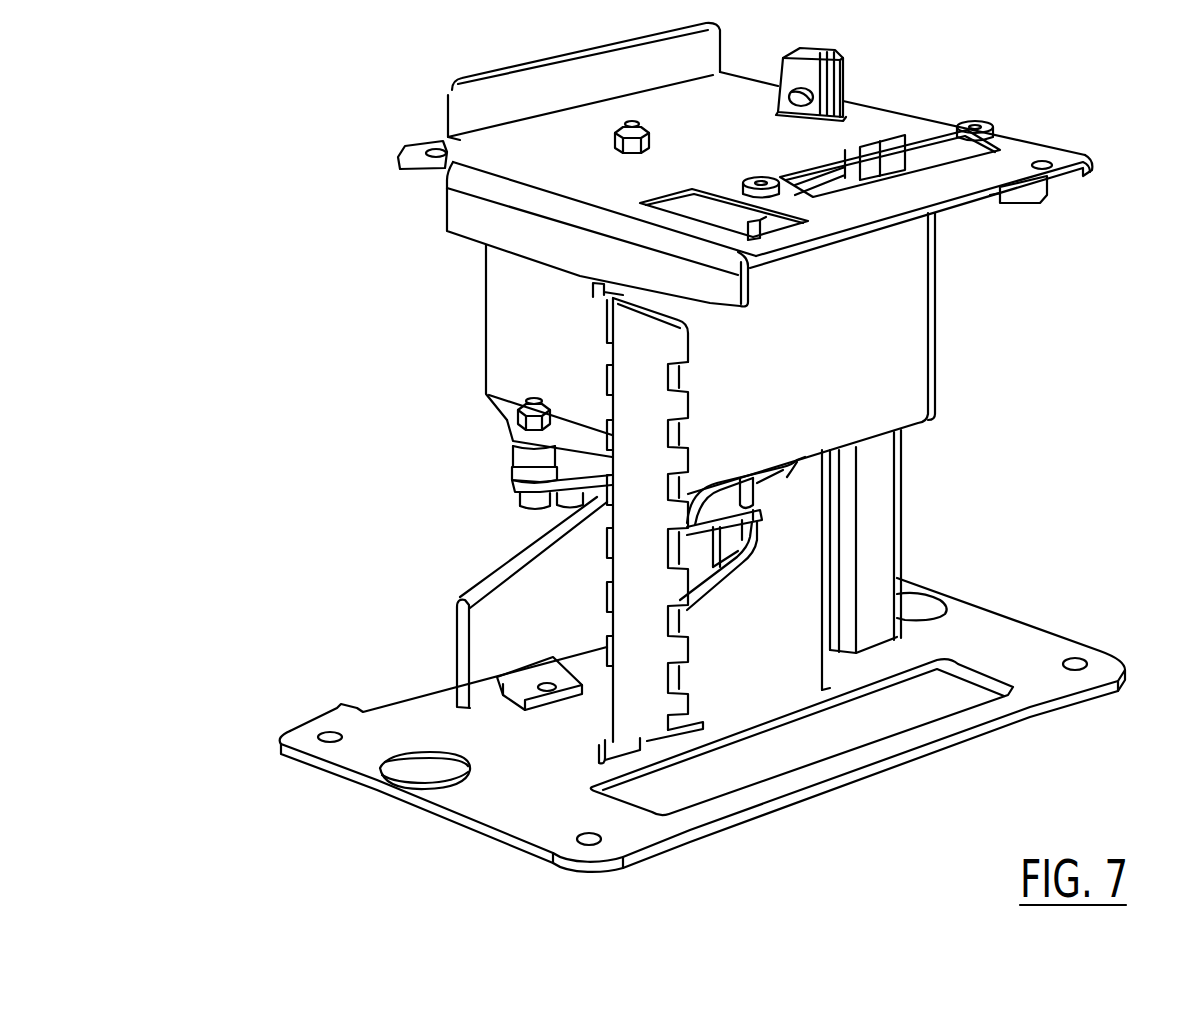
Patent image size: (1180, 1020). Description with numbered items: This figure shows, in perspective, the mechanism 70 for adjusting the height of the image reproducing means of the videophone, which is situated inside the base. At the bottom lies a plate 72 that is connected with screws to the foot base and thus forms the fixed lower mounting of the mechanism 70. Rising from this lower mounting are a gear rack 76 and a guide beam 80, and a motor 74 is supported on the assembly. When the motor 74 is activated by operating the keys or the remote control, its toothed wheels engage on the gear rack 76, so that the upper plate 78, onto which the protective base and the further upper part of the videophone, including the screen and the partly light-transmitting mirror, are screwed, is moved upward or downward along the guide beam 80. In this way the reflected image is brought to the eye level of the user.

The mechanism for adjusting the height 70 is at (400, 415).
The plate 72 is at (1048, 645).
The motor 74 is at (912, 343).
The gear rack 76 is at (637, 565).
The plate 78 is at (513, 157).
The guide beam 80 is at (807, 67).